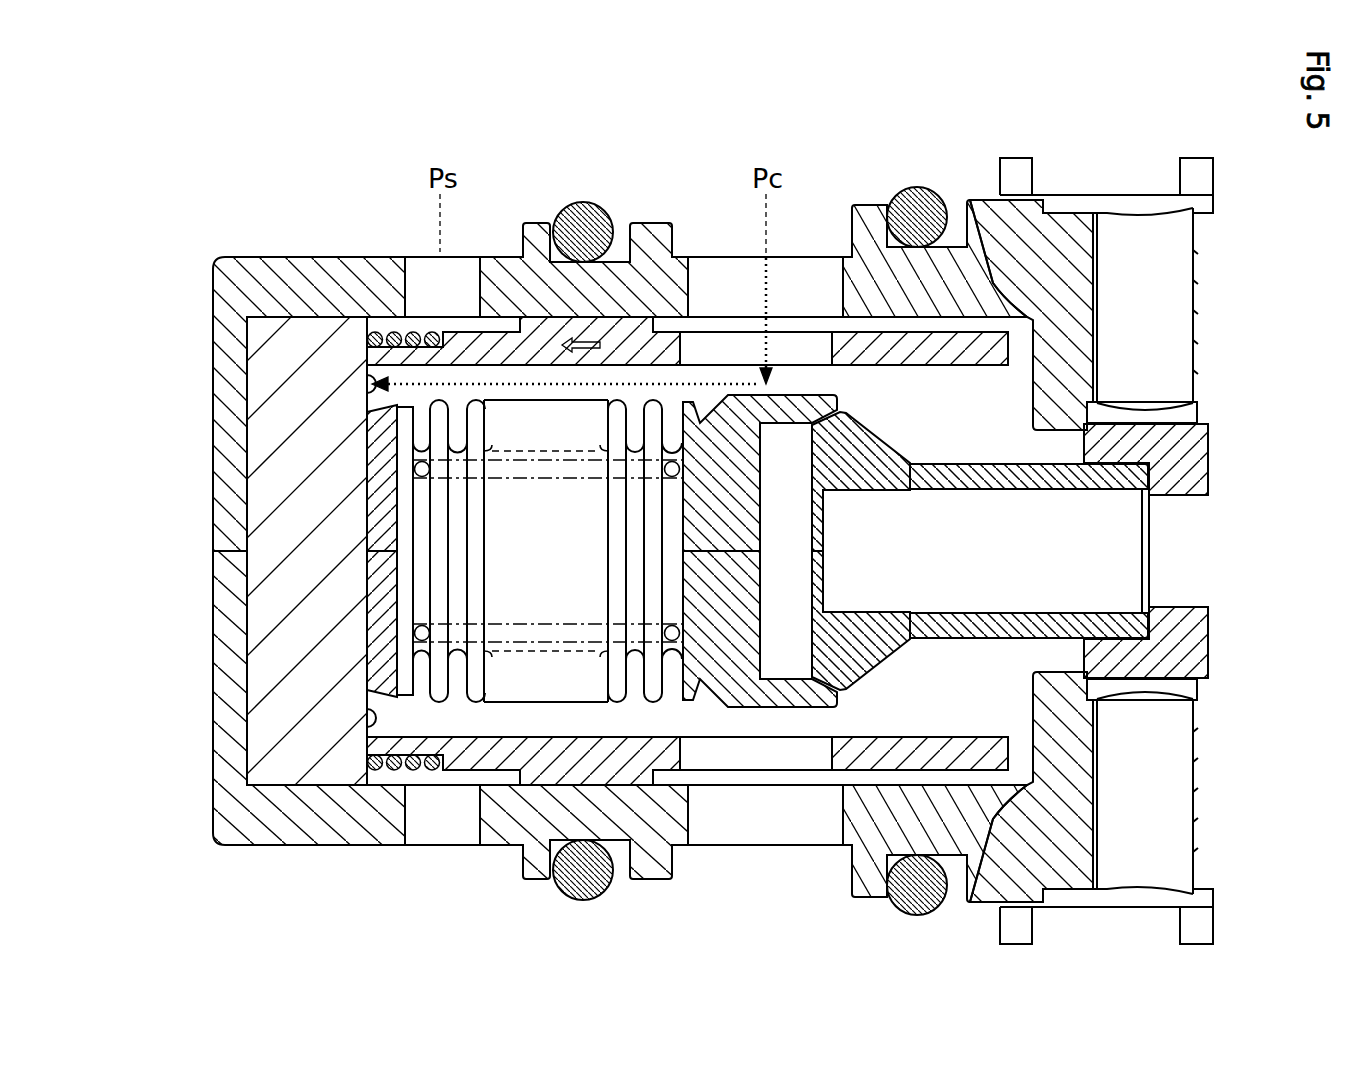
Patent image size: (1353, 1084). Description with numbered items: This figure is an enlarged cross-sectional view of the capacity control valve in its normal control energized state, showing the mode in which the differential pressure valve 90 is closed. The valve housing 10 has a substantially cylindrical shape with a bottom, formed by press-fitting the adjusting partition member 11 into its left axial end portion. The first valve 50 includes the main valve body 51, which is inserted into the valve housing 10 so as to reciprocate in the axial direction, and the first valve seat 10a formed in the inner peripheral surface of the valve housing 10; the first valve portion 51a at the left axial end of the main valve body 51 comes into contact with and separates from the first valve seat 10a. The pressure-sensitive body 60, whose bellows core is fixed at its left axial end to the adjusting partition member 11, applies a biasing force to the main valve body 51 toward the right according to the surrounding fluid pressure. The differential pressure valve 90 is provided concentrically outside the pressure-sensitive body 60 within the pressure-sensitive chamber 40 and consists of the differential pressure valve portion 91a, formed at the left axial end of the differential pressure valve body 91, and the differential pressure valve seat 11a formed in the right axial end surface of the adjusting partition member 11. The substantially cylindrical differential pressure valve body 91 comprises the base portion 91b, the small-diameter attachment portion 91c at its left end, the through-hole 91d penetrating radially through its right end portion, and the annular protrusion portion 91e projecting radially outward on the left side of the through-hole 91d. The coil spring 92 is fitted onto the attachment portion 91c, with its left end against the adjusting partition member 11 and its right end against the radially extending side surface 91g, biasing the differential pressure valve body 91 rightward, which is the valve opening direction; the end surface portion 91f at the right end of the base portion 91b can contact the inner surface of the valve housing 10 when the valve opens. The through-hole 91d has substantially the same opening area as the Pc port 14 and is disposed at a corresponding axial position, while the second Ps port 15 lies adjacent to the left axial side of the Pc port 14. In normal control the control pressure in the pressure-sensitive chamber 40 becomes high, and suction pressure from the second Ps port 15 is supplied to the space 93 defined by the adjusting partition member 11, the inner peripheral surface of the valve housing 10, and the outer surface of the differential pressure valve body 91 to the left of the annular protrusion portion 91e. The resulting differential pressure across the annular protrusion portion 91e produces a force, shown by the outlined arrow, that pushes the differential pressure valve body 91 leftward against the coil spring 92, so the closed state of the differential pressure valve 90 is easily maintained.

The valve housing 10 is at (244, 252).
The first valve seat 10a is at (1050, 425).
The adjusting partition member 11 is at (244, 566).
The differential pressure valve seat 11a is at (367, 379).
The Pc port 14 is at (697, 257).
The second Ps port 15 is at (398, 330).
The pressure-sensitive chamber 40 is at (878, 372).
The first valve 50 is at (1123, 110).
The main valve body 51 is at (1145, 685).
The first valve portion 51a is at (1086, 420).
The pressure-sensitive body 60 is at (440, 707).
The differential pressure valve 90 is at (118, 362).
The differential pressure valve body 91 is at (490, 775).
The differential pressure valve portion 91a is at (367, 366).
The base portion 91b is at (536, 334).
The attachment portion 91c is at (433, 338).
The through-hole 91d is at (822, 330).
The annular protrusion portion 91e is at (610, 320).
The end surface portion 91f is at (922, 362).
The side surface 91g is at (487, 329).
The coil spring 92 is at (373, 776).
The space 93 is at (378, 331).